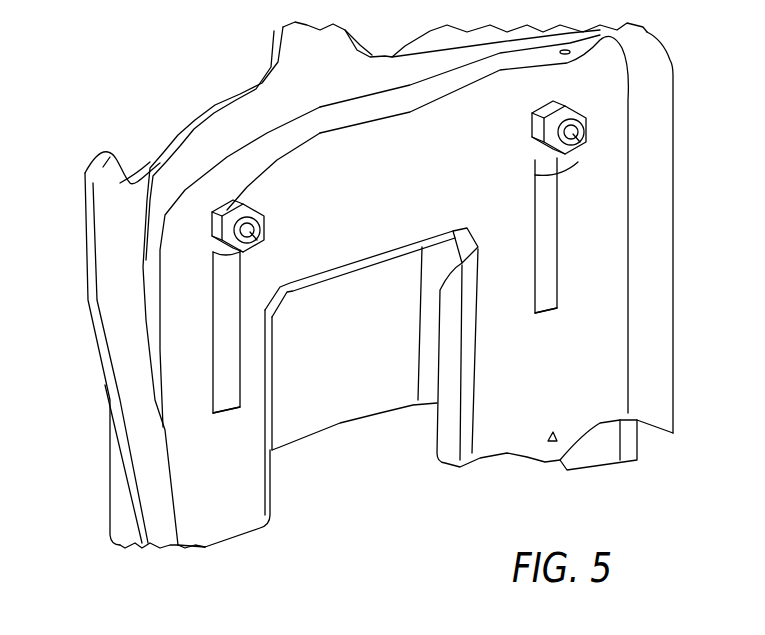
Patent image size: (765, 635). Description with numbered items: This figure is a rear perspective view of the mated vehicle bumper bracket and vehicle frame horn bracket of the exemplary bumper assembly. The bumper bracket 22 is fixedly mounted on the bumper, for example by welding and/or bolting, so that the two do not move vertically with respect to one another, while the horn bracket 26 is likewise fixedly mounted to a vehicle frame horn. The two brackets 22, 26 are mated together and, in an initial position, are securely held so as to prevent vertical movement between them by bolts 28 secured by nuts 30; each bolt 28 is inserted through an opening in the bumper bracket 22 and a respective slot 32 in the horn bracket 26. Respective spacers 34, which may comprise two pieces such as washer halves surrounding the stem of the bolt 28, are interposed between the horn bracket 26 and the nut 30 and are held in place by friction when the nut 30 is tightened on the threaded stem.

The bumper bracket 22 is at (218, 103).
The horn bracket 26 is at (247, 490).
The bolt 28 is at (258, 207).
The nut 30 is at (266, 243).
The slot 32 is at (222, 345).
The spacer 34 is at (213, 222).